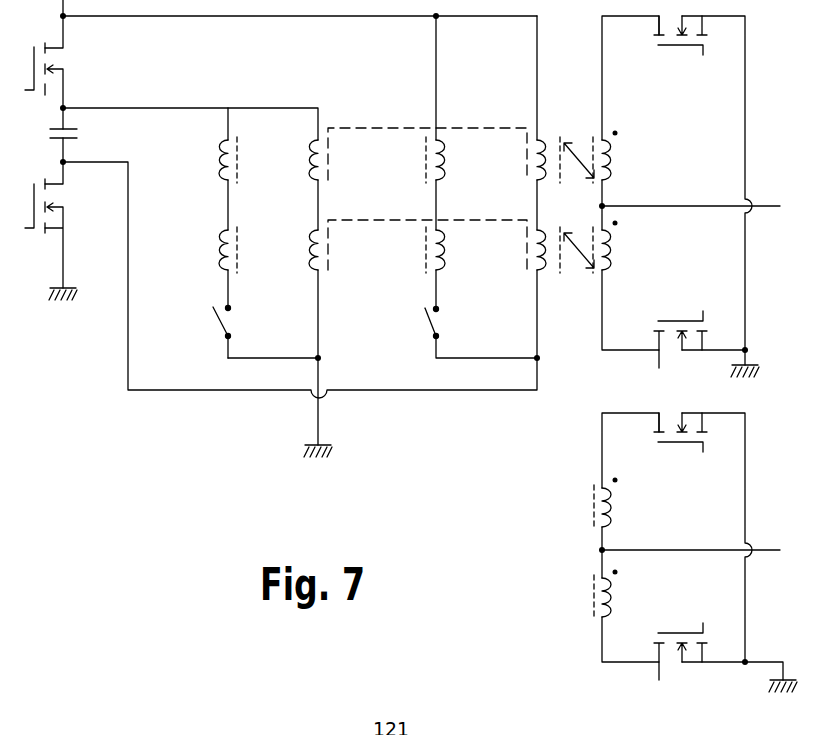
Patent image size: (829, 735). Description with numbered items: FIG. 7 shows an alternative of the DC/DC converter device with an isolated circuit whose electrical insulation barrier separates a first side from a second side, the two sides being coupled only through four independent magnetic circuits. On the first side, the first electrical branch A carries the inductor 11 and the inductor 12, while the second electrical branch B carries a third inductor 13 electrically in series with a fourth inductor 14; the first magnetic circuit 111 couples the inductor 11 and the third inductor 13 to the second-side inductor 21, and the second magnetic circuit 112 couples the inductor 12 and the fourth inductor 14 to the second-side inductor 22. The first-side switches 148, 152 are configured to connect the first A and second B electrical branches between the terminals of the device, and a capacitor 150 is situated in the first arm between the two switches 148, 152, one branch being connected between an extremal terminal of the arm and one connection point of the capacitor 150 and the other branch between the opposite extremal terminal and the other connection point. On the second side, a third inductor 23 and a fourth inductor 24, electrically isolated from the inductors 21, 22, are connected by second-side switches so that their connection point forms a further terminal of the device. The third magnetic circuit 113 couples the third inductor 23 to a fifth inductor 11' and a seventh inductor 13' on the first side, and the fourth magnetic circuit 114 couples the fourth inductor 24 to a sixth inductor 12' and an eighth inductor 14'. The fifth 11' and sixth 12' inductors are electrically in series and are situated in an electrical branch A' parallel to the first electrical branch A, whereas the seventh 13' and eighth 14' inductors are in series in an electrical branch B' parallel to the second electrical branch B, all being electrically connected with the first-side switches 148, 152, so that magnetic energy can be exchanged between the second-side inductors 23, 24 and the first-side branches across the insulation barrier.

The inductor 11 is at (284, 168).
The fifth inductor 11' is at (192, 170).
The inductor 12 is at (285, 256).
The sixth inductor 12' is at (193, 255).
The third inductor 13 is at (553, 125).
The seventh inductor 13' is at (461, 175).
The fourth inductor 14 is at (554, 282).
The eighth inductor 14' is at (414, 263).
The inductor 21 is at (618, 160).
The inductor 22 is at (618, 250).
The third inductor 23 is at (618, 510).
The fourth inductor 24 is at (618, 600).
The first magnetic circuit 111 is at (472, 128).
The second magnetic circuit 112 is at (476, 220).
The third magnetic circuit 113 is at (238, 163).
The fourth magnetic circuit 114 is at (238, 250).
The switch 148 is at (428, 322).
The capacitor 150 is at (77, 133).
The switch 152 is at (217, 324).
The first electrical branch A is at (307, 72).
The electrical branch A' is at (217, 85).
The second electrical branch B is at (549, 26).
The electrical branch B' is at (412, 40).